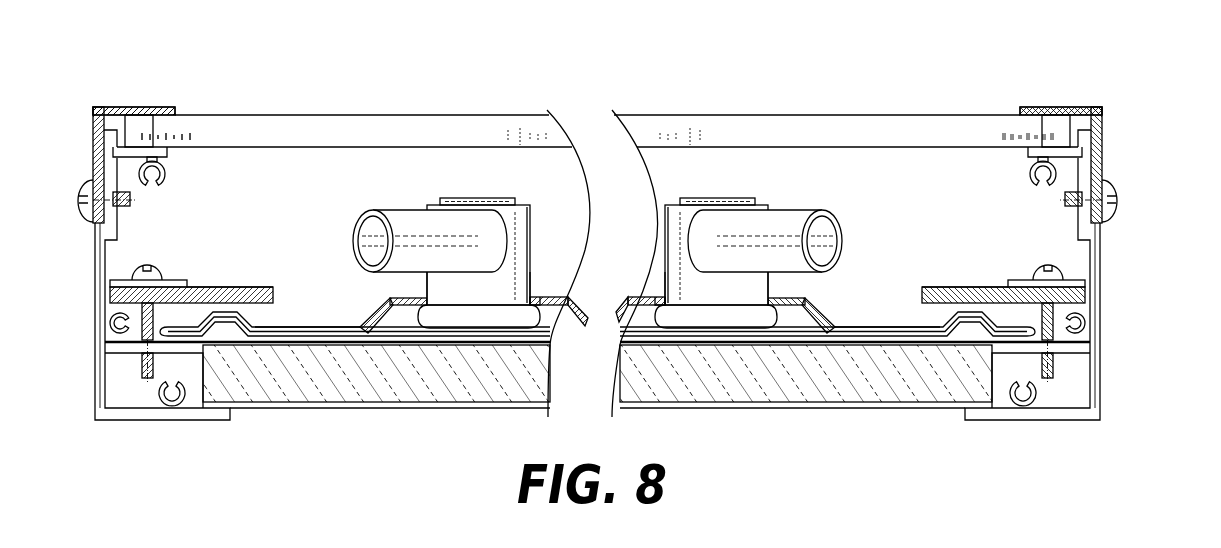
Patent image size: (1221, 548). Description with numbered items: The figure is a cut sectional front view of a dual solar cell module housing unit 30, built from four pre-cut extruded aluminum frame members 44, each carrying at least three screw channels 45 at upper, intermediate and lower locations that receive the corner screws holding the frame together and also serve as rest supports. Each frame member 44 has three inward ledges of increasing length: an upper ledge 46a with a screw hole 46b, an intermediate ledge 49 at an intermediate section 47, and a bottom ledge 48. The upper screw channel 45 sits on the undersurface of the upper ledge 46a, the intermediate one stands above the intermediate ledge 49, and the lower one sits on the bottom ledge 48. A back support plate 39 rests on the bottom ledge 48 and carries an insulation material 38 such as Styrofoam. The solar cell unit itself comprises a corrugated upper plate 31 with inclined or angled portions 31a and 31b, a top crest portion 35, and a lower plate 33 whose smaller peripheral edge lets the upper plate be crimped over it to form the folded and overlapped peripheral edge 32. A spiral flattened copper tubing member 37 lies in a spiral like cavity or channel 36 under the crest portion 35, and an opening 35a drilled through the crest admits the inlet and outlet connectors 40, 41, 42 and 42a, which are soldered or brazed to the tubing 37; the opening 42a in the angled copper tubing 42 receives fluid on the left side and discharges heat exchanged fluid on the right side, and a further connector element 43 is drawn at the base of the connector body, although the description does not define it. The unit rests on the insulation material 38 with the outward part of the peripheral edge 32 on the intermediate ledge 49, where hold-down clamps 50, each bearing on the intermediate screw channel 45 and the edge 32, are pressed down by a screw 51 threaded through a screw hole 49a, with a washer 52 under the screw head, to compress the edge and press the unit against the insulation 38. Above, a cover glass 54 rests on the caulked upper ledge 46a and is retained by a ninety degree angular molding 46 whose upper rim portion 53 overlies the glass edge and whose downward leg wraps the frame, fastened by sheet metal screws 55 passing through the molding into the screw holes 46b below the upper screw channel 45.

The dual solar cell module housing unit 30 is at (766, 53).
The corrugated upper plate 31 is at (290, 327).
The inclined or angled portion 31a is at (375, 310).
The inclined or angled portion 31b is at (820, 310).
The folded and overlapped peripheral edge 32 is at (242, 300).
The lower plate 33 is at (316, 333).
The top crest portion 35 is at (557, 297).
The opening 35a is at (534, 300).
The spiral like cavity or channel 36 is at (392, 318).
The flattened copper tubing member 37 is at (442, 318).
The insulation material 38 is at (462, 377).
The back support plate 39 is at (370, 410).
The fluid inlet and outlet connector 40 is at (487, 198).
The fluid inlet and outlet connector 41 is at (532, 207).
The angled copper tubing 42 is at (398, 210).
The opening within the angled copper tubing 42a is at (366, 240).
The base portion 43 is at (503, 304).
The frame member 44 is at (95, 262).
The screw channel 45 is at (165, 170).
The angular molding 46 is at (93, 120).
The upper ledge 46a is at (156, 136).
The screw hole 46b is at (128, 198).
The intermediate section 47 is at (108, 326).
The bottom ledge 48 is at (133, 420).
The intermediate ledge 49 is at (165, 353).
The screw hole 49a is at (146, 352).
The hold-down clamp 50 is at (215, 287).
The screw 51 is at (138, 270).
The washer 52 is at (183, 280).
The upper rim portion 53 is at (150, 107).
The cover glass 54 is at (268, 117).
The sheet metal screw 55 is at (79, 207).